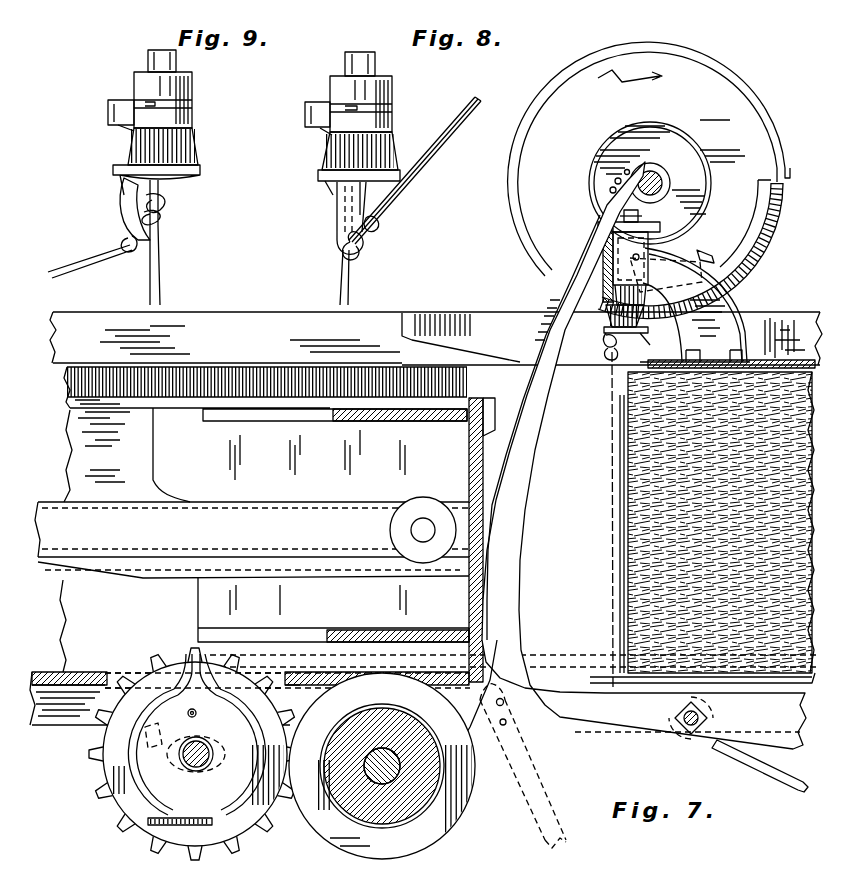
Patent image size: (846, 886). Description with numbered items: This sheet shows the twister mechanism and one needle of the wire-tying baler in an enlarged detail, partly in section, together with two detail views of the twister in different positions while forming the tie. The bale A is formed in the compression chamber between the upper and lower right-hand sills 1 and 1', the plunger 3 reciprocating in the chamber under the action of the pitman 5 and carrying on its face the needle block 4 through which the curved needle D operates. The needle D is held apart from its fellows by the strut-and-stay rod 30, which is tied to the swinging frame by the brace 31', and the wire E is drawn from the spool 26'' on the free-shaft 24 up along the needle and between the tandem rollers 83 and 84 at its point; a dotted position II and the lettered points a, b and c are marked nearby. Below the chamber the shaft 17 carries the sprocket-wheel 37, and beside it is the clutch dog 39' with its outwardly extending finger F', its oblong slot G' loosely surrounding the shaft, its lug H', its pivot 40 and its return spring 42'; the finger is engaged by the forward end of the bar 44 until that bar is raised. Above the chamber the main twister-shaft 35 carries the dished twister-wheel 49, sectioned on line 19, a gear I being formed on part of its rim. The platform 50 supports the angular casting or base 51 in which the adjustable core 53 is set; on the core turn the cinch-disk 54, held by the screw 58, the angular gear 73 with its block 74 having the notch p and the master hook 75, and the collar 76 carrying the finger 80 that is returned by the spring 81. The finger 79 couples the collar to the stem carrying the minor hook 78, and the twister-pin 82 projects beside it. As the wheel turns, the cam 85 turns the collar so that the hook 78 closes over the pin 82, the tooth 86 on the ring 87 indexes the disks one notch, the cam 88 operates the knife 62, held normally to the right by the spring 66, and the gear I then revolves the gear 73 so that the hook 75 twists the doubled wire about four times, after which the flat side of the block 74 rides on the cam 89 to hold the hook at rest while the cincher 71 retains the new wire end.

In FIG. 7, the upper right-hand sill 1 is at (436, 407).
In FIG. 7, the lower right-hand sill 1' is at (247, 668).
In FIG. 7, the plunger 3 is at (310, 511).
In FIG. 7, the needle block 4 is at (560, 510).
In FIG. 7, the pitman 5 is at (252, 540).
In FIG. 7, the shaft 17 is at (196, 766).
In FIG. 7, the section line 19— 19 is at (524, 84).
In FIG. 7, the free-shaft 24 is at (377, 784).
In FIG. 7, the spool 26'' is at (395, 766).
In FIG. 7, the strut-and-stay rod 30 is at (686, 736).
In FIG. 7, the brace 31' is at (760, 778).
In FIG. 7, the main twister-shaft 35 is at (664, 170).
In FIG. 7, the sprocket-wheel 37 is at (108, 800).
In FIG. 7, the dog 39' is at (101, 767).
In FIG. 7, the pivot 40 is at (182, 718).
In FIG. 7, the helical spring 42' is at (180, 849).
In FIG. 7, the bar 44 is at (296, 656).
In FIG. 7, the twister-wheel 49 is at (635, 160).
In FIG. 7, the platform 50 is at (775, 370).
In FIG. 7, the angular casting or base 51 is at (748, 312).
In FIG. 9, the core 53 is at (152, 50).
In FIG. 8, the core 53 is at (350, 52).
In FIG. 7, the cinch-disk 54 is at (652, 229).
In FIG. 7, the screw 58 is at (648, 219).
In FIG. 7, the knife 62 is at (742, 282).
In FIG. 7, the helical spring 66 is at (733, 273).
In FIG. 7, the cincher 71 is at (600, 265).
In FIG. 9, the angular gear 73 is at (200, 150).
In FIG. 8, the angular gear 73 is at (324, 150).
In FIG. 7, the angular gear 73 is at (626, 326).
In FIG. 9, the block 74 is at (113, 170).
In FIG. 8, the block 74 is at (318, 178).
In FIG. 9, the master hook 75 is at (130, 252).
In FIG. 8, the master hook 75 is at (356, 258).
In FIG. 7, the master hook 75 is at (604, 347).
In FIG. 9, the collar 76 is at (192, 110).
In FIG. 8, the collar 76 is at (392, 112).
In FIG. 9, the minor hook 78 is at (130, 212).
In FIG. 8, the minor hook 78 is at (372, 228).
In FIG. 9, the finger 79 is at (150, 100).
In FIG. 8, the finger 79 is at (350, 106).
In FIG. 9, the finger 80 is at (108, 104).
In FIG. 8, the finger 80 is at (305, 106).
In FIG. 9, the spring 81 is at (128, 130).
In FIG. 8, the spring 81 is at (326, 130).
In FIG. 7, the spring 81 is at (670, 320).
In FIG. 9, the twister-pin 82 is at (166, 216).
In FIG. 8, the twister-pin 82 is at (385, 222).
In FIG. 7, the twister-pin 82 is at (606, 322).
In FIG. 7, the roller 83 is at (612, 186).
In FIG. 7, the roller 84 is at (635, 163).
In FIG. 7, the cam 85 is at (566, 254).
In FIG. 7, the tooth 86 is at (590, 196).
In FIG. 7, the ring 87 is at (656, 122).
In FIG. 7, the cam 88 is at (666, 275).
In FIG. 7, the cam 89 is at (752, 88).
In FIG. 7, the bale A is at (702, 527).
In FIG. 7, the needle D is at (644, 455).
In FIG. 9, the wire E is at (148, 288).
In FIG. 8, the wire E is at (340, 290).
In FIG. 7, the wire E is at (520, 384).
In FIG. 7, the gear I is at (774, 243).
In FIG. 7, the needle second position II is at (540, 796).
In FIG. 9, the notch p is at (118, 183).
In FIG. 8, the notch p is at (340, 190).
In FIG. 7, the finger F' is at (195, 661).
In FIG. 7, the lug H' is at (188, 752).
In FIG. 7, the oblong aperture G' is at (166, 777).
In FIG. 7, the twine portion a is at (312, 885).
In FIG. 7, the slot b is at (436, 885).
In FIG. 7, the slot c is at (372, 885).